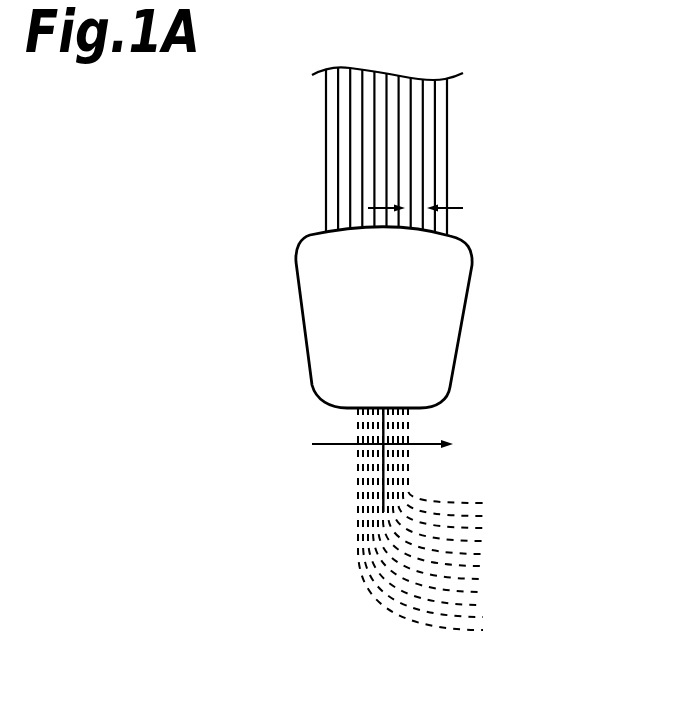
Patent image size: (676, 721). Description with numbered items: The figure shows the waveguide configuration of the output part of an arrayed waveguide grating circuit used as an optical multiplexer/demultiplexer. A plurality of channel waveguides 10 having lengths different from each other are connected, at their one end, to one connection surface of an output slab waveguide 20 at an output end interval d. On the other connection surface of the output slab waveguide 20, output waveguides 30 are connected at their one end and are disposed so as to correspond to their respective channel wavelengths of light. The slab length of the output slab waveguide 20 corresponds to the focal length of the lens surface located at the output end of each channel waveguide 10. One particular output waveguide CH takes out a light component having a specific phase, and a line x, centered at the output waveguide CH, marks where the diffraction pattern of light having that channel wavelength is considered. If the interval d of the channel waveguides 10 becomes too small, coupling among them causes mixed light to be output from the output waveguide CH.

The channel waveguides 10 is at (316, 136).
The output slab waveguide 20 is at (297, 268).
The output waveguides 30 is at (394, 519).
The output end interval d is at (418, 207).
The line X x is at (367, 439).
The output waveguide CH is at (448, 519).